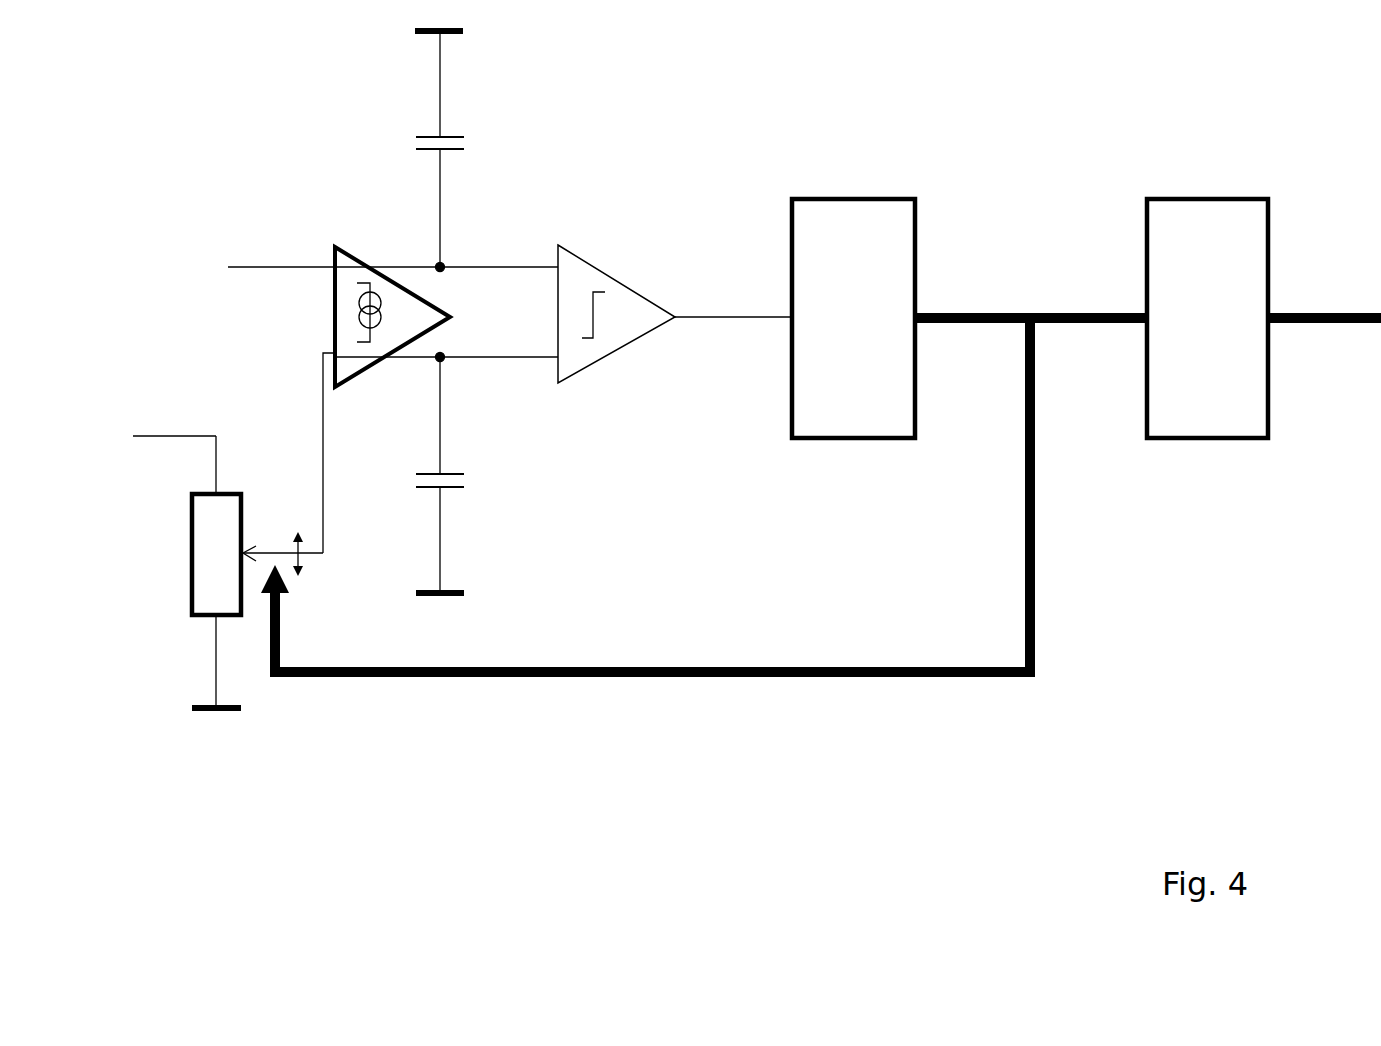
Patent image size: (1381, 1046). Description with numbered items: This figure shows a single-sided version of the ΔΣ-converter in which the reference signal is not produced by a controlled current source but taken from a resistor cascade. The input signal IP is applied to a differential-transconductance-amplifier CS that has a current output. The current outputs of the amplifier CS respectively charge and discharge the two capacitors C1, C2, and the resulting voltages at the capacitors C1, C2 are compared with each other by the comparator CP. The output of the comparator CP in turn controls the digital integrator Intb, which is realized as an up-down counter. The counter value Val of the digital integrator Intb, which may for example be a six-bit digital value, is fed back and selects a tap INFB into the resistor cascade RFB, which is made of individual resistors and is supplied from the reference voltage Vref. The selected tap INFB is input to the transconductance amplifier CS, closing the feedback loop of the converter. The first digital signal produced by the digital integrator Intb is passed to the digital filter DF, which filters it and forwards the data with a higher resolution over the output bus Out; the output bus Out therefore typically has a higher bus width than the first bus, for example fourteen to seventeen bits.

The input signal IP is at (302, 265).
The capacitor C2 is at (464, 151).
The capacitor C1 is at (465, 473).
The differential-transconductance-amplifier CS is at (446, 300).
The comparator CP is at (675, 297).
The digital integrator Intb is at (853, 318).
The digital filter DF is at (1091, 318).
The output bus Out is at (1324, 343).
The counter value Val is at (645, 527).
The reference voltage Vref is at (135, 454).
The resistor cascade RFB is at (217, 601).
The tap INFB is at (367, 453).